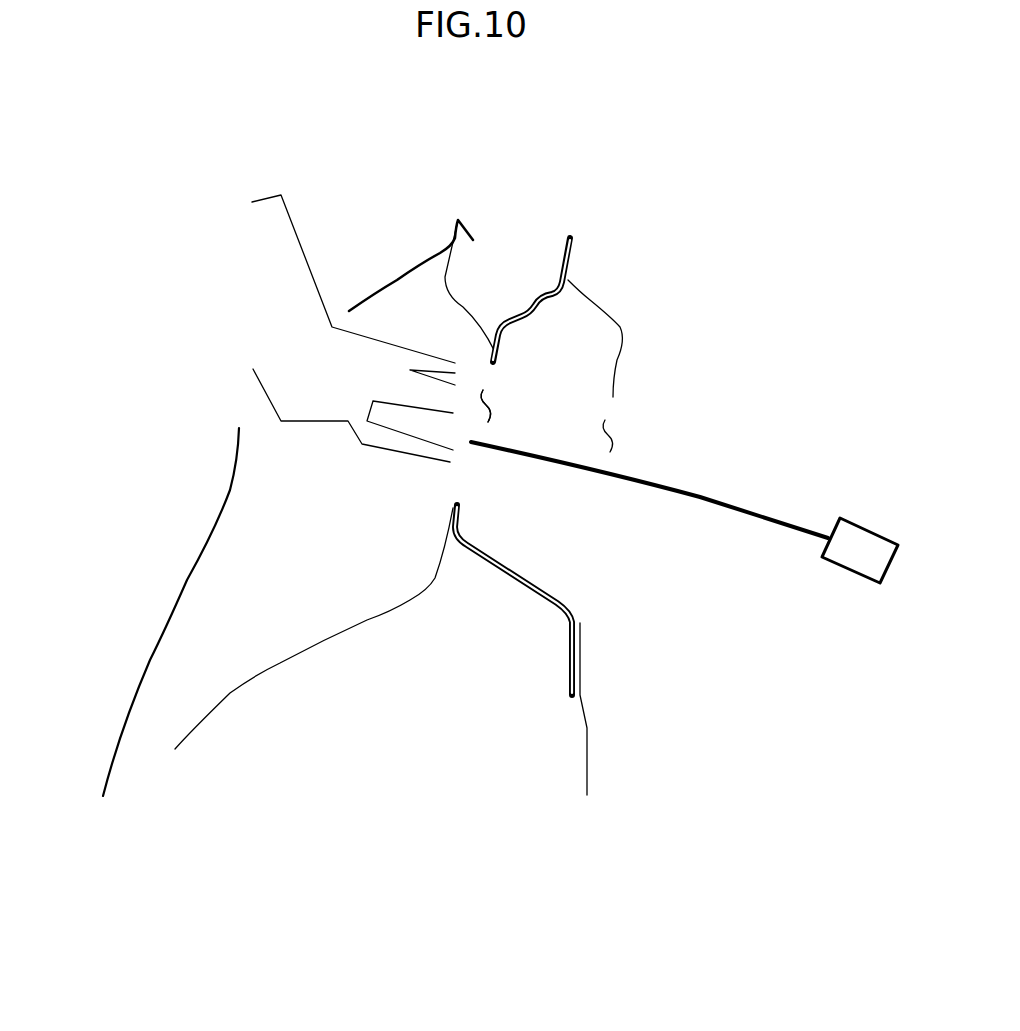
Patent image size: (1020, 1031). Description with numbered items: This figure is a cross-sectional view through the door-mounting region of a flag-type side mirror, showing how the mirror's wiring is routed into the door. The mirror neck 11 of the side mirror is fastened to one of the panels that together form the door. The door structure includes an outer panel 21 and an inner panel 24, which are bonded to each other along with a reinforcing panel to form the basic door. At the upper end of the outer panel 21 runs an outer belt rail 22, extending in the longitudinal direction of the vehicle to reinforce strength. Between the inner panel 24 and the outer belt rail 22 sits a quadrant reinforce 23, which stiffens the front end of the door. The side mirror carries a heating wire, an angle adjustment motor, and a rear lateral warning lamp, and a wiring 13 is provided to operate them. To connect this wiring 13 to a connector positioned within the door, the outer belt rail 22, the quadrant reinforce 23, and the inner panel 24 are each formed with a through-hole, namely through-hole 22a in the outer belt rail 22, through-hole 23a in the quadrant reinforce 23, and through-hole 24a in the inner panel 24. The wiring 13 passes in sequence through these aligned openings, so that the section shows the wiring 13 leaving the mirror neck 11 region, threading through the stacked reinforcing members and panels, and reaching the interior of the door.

The mirror neck 11 is at (293, 388).
The wiring 13 is at (745, 503).
The outer panel 21 is at (172, 610).
The outer belt rail 22 is at (280, 663).
The through-hole 22a is at (490, 402).
The quadrant reinforce 23 is at (510, 577).
The through-hole 23a is at (485, 406).
The inner panel 24 is at (587, 743).
The through-hole 24a is at (613, 430).